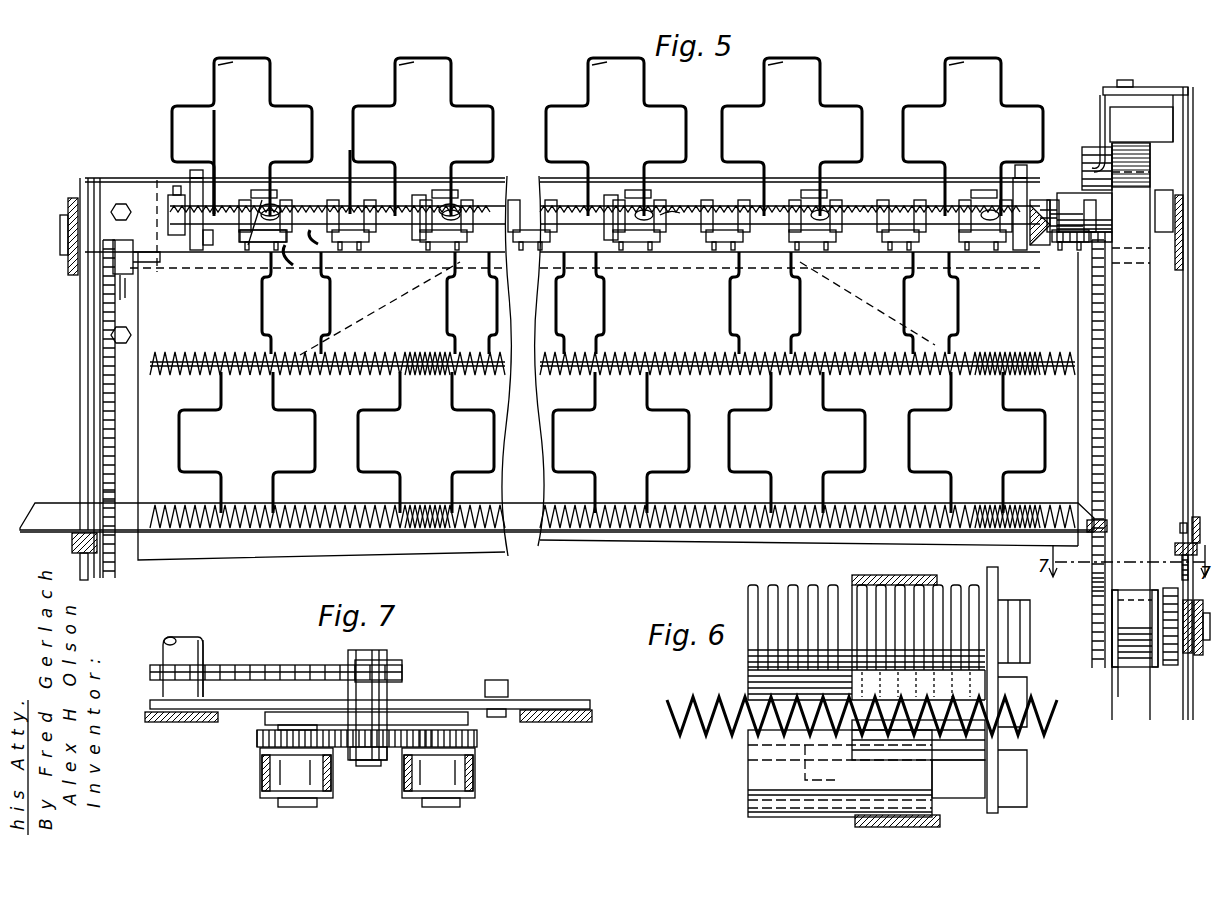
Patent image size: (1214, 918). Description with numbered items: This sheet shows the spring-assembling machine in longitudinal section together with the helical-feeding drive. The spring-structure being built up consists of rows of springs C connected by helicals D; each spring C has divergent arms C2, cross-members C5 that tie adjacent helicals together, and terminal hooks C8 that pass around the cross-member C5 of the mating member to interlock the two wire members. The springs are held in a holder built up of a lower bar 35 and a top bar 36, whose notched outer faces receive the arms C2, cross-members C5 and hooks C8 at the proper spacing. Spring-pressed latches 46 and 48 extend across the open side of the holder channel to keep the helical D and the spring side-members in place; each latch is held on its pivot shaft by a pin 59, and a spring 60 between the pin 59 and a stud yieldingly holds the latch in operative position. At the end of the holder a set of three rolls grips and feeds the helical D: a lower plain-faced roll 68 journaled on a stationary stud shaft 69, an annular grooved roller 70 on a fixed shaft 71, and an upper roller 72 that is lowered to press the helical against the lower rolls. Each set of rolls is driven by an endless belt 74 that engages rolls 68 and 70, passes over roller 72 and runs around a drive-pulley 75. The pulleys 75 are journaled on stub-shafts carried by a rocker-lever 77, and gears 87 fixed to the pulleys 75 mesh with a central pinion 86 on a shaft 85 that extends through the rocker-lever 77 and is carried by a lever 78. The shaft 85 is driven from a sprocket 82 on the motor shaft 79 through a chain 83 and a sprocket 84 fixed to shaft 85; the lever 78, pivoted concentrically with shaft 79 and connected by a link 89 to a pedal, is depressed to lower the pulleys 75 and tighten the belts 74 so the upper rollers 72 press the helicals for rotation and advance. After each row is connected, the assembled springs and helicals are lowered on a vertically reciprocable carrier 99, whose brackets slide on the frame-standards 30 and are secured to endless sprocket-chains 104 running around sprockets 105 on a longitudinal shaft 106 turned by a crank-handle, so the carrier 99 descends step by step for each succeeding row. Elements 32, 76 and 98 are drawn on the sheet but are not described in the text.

In FIG. 5, the frame-standards 30 is at (80, 320).
In FIG. 7, the frame-standards 30 is at (192, 722).
In FIG. 5, the end plate 32 is at (76, 200).
In FIG. 5, the lower bar 35 is at (218, 250).
In FIG. 5, the top bar 36 is at (416, 198).
In FIG. 5, the latch 46 is at (612, 198).
In FIG. 5, the latch 48 is at (318, 246).
In FIG. 5, the pin 59 is at (288, 262).
In FIG. 5, the spring 60 is at (265, 250).
In FIG. 5, the lower plain-faced roll 68 is at (1075, 235).
In FIG. 6, the lower plain-faced roll 68 is at (748, 775).
In FIG. 6, the stud shaft 69 is at (960, 798).
In FIG. 5, the annular grooved roller 70 is at (1058, 195).
In FIG. 6, the annular grooved roller 70 is at (802, 590).
In FIG. 6, the fixed shaft 71 is at (1030, 644).
In FIG. 5, the upper roller 72 is at (1082, 147).
In FIG. 6, the upper roller 72 is at (975, 743).
In FIG. 5, the endless belt 74 is at (1140, 500).
In FIG. 7, the endless belt 74 is at (260, 777).
In FIG. 6, the endless belt 74 is at (905, 583).
In FIG. 5, the drive-pulley 75 is at (1122, 668).
In FIG. 7, the drive-pulley 75 is at (278, 782).
In FIG. 7, the stud 76 is at (455, 806).
In FIG. 7, the rocker-lever 77 is at (420, 715).
In FIG. 7, the lever 78 is at (548, 705).
In FIG. 7, the motor shaft 79 is at (205, 650).
In FIG. 7, the sprocket 82 is at (160, 660).
In FIG. 7, the chain 83 is at (305, 668).
In FIG. 7, the sprocket 84 is at (405, 674).
In FIG. 7, the shaft 85 is at (385, 660).
In FIG. 7, the central pinion 86 is at (370, 760).
In FIG. 5, the gear 87 is at (1170, 665).
In FIG. 7, the gear 87 is at (257, 740).
In FIG. 7, the link 89 is at (507, 685).
In FIG. 5, the nut 98 is at (1177, 549).
In FIG. 5, the carrier 99 is at (262, 532).
In FIG. 5, the endless sprocket-chain 104 is at (103, 434).
In FIG. 5, the sprocket 105 is at (135, 248).
In FIG. 5, the longitudinal shaft 106 is at (125, 285).
In FIG. 5, the spring C is at (300, 326).
In FIG. 5, the divergent arms C2 is at (250, 246).
In FIG. 5, the cross-members C5 is at (216, 185).
In FIG. 5, the hook C8 is at (280, 208).
In FIG. 5, the helical D is at (630, 370).
In FIG. 6, the helical D is at (862, 725).